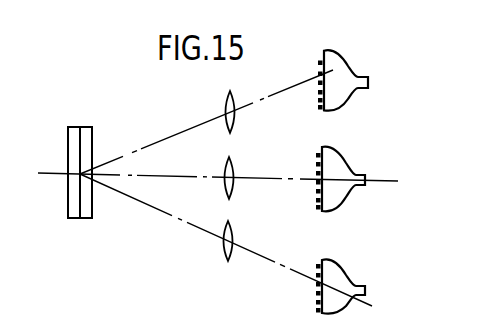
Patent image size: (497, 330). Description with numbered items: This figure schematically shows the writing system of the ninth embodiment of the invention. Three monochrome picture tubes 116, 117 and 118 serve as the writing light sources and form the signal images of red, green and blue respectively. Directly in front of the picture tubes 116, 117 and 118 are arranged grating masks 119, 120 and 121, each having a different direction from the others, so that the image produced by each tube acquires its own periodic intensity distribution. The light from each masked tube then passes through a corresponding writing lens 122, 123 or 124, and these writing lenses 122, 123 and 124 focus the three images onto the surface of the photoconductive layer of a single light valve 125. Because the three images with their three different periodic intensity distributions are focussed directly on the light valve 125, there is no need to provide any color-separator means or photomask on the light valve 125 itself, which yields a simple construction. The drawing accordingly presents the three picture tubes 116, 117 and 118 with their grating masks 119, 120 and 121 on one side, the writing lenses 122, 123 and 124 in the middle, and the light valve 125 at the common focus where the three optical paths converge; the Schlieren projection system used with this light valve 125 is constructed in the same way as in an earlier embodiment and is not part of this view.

The monochrome picture tube 116 is at (349, 63).
The monochrome picture tube 117 is at (348, 162).
The monochrome picture tube 118 is at (349, 274).
The grating mask 119 is at (318, 58).
The grating mask 120 is at (316, 162).
The grating mask 121 is at (316, 265).
The writing lens 122 is at (226, 101).
The writing lens 123 is at (226, 163).
The writing lens 124 is at (224, 250).
The light valve 125 is at (91, 127).